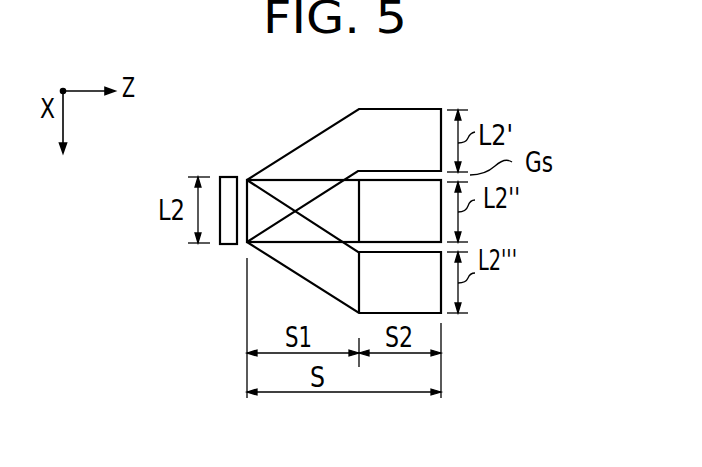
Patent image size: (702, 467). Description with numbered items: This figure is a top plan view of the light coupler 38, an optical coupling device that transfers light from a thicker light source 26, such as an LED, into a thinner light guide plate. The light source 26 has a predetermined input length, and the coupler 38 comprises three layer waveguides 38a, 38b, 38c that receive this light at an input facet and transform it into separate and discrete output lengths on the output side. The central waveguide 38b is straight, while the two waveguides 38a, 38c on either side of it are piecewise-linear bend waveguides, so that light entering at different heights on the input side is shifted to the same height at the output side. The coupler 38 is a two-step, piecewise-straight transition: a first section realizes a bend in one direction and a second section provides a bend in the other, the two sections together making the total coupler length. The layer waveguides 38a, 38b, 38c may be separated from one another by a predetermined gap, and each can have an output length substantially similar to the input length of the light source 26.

The light source 26 is at (228, 166).
The light coupler 38 is at (363, 192).
The waveguide 38a is at (431, 94).
The waveguide 38b is at (509, 215).
The waveguide 38c is at (509, 282).